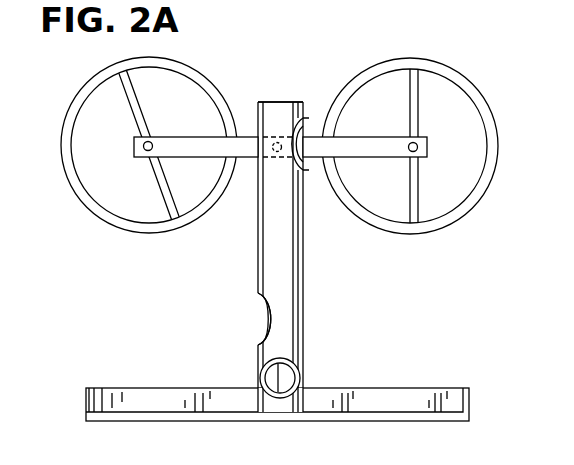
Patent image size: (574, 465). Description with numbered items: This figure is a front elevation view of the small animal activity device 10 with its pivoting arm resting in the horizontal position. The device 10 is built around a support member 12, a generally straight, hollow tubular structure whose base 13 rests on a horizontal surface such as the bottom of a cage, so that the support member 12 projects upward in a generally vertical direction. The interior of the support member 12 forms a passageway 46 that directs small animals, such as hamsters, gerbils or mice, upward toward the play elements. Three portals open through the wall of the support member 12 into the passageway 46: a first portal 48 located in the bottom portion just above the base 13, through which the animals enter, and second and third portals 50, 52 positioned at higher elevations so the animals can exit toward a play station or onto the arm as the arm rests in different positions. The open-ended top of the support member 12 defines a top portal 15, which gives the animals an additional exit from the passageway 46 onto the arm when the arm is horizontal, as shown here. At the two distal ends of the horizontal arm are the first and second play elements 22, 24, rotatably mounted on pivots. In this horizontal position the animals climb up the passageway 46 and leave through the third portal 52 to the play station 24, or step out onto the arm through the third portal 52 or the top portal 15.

The small animal activity device 10 is at (287, 257).
The support member 12 is at (263, 268).
The base 13 is at (86, 400).
The top portal 15 is at (275, 102).
The first play element 22 is at (90, 80).
The second play element 24 is at (482, 105).
The passageway 46 is at (278, 377).
The first portal 48 is at (302, 373).
The second portal 50 is at (270, 320).
The third portal 52 is at (303, 130).